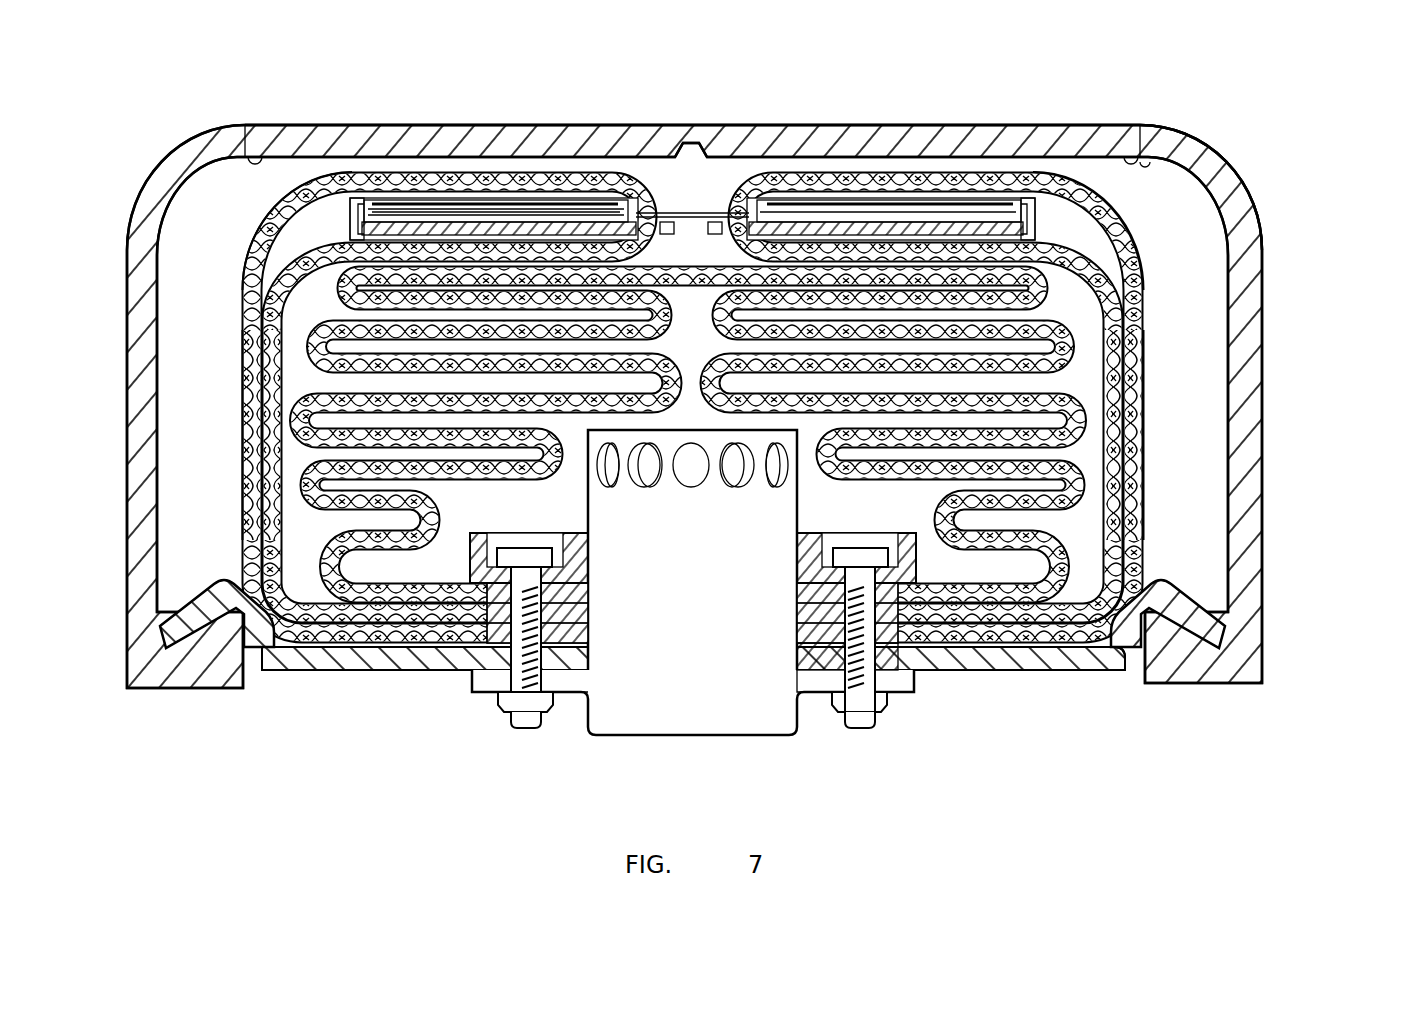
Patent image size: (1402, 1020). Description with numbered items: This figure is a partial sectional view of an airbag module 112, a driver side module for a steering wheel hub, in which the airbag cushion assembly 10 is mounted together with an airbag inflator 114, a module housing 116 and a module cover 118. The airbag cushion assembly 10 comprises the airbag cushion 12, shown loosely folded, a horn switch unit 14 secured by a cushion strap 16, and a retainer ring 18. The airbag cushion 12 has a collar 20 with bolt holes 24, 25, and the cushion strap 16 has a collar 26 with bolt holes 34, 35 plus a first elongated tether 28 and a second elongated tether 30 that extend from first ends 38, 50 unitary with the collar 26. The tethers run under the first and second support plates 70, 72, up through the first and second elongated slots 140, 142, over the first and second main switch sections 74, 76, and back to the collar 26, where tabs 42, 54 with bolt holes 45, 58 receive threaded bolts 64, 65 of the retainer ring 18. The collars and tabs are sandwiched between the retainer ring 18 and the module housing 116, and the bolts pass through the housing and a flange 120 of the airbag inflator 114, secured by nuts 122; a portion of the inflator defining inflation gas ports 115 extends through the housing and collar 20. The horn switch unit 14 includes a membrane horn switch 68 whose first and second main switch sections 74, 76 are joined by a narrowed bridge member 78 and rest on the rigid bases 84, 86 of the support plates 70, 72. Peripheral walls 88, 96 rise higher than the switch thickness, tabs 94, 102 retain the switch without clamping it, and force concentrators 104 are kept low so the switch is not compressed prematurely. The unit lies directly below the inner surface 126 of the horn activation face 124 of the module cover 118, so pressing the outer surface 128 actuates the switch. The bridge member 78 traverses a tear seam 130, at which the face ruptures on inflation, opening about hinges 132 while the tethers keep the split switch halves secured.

The airbag cushion assembly 10 is at (1200, 325).
The airbag cushion 12 is at (303, 391).
The horn switch unit 14 is at (342, 218).
The cushion strap 16 is at (1146, 404).
The retainer ring 18 is at (553, 533).
The collar 20 is at (588, 590).
The bolt hole 24 is at (580, 562).
The bolt hole 25 is at (803, 590).
The collar 26 is at (588, 613).
The first elongated tether 28 is at (312, 655).
The second elongated tether 30 is at (1085, 665).
The bolt hole 34 is at (470, 665).
The bolt hole 35 is at (800, 610).
The first end 38 is at (437, 660).
The tab 42 is at (588, 640).
The bolt hole 45 is at (490, 688).
The first end 50 is at (998, 672).
The tab 54 is at (800, 630).
The bolt hole 58 is at (805, 648).
The threaded bolt 64 is at (548, 672).
The threaded bolt 65 is at (868, 728).
The membrane horn switch 68 is at (855, 200).
The first support plate 70 is at (300, 240).
The second support plate 72 is at (1100, 254).
The first main switch section 74 is at (452, 225).
The second main switch section 76 is at (888, 205).
The first narrowed bridge member 78 is at (700, 222).
The base 84 is at (530, 212).
The base 86 is at (975, 207).
The peripheral wall 88 is at (350, 203).
The tab 94 is at (380, 207).
The peripheral wall 96 is at (1036, 210).
The tab 102 is at (800, 207).
The force concentrator 104 is at (500, 216).
The airbag module 112 is at (843, 58).
The airbag inflator 114 is at (664, 738).
The inflation gas ports 115 is at (643, 486).
The module housing 116 is at (1118, 668).
The module cover 118 is at (1268, 478).
The flange 120 is at (915, 680).
The nut 122 is at (547, 713).
The horn activation face 124 is at (1118, 125).
The inner surface 126 is at (1092, 127).
The outer surface 128 is at (1170, 128).
The tear seam 130 is at (708, 150).
The hinges 132 is at (246, 152).
The first elongated slot 140 is at (662, 221).
The second elongated slot 142 is at (716, 221).